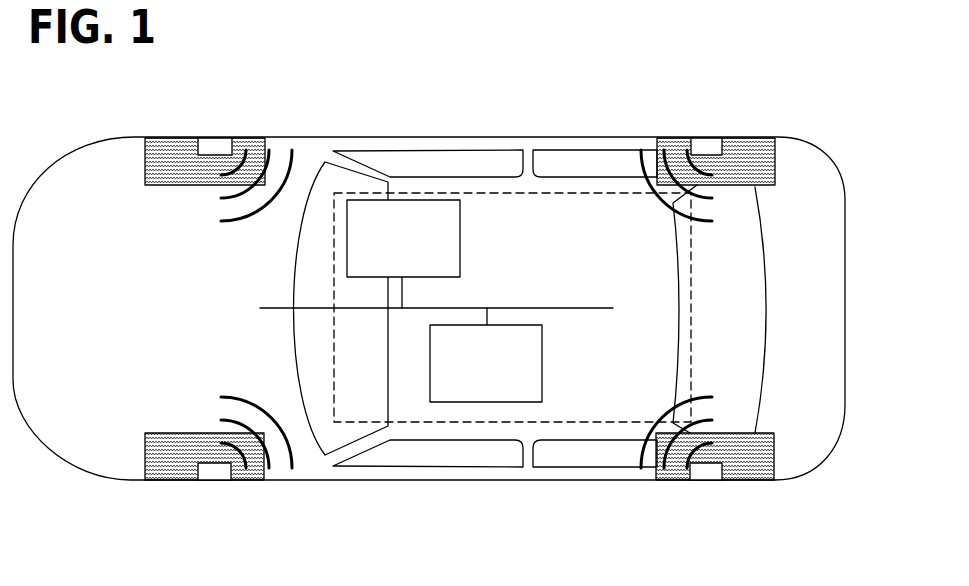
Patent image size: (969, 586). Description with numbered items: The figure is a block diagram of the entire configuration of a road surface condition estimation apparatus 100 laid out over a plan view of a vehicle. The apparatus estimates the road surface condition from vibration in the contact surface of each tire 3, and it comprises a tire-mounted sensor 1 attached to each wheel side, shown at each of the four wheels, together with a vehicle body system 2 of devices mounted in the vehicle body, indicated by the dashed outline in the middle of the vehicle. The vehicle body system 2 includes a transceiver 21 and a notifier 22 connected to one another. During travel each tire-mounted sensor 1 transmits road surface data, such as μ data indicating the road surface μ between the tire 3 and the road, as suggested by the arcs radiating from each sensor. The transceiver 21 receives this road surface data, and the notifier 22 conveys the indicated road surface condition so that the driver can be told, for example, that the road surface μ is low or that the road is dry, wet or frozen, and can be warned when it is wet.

The road surface condition estimation apparatus 100 is at (344, 112).
The tire-mounted sensor 1 is at (210, 147).
The vehicle body system 2 is at (627, 193).
The tire 3 is at (145, 162).
The transceiver 21 is at (502, 402).
The notifier 22 is at (416, 200).